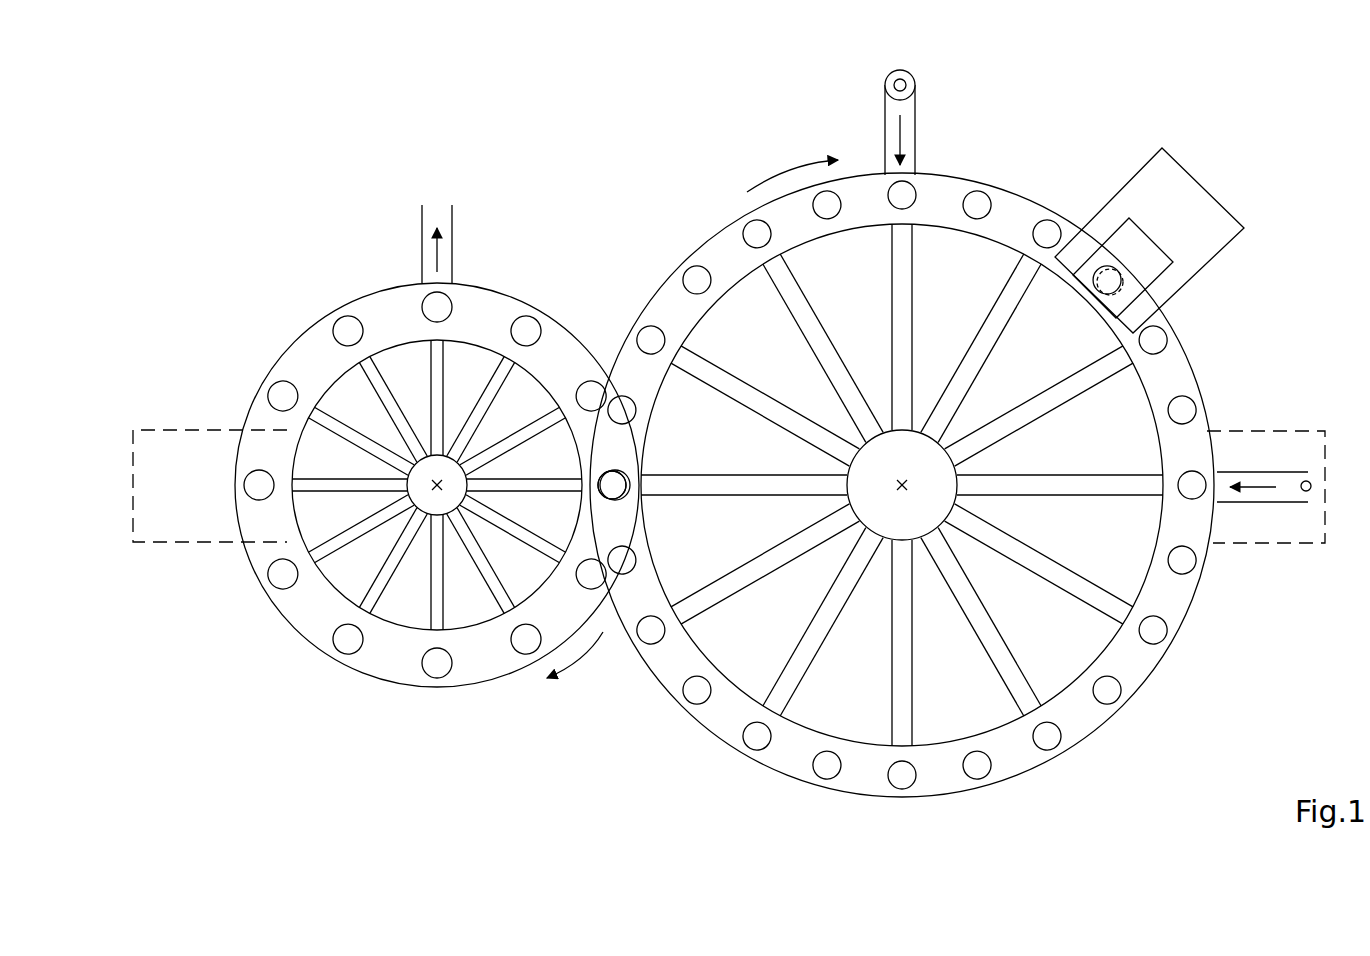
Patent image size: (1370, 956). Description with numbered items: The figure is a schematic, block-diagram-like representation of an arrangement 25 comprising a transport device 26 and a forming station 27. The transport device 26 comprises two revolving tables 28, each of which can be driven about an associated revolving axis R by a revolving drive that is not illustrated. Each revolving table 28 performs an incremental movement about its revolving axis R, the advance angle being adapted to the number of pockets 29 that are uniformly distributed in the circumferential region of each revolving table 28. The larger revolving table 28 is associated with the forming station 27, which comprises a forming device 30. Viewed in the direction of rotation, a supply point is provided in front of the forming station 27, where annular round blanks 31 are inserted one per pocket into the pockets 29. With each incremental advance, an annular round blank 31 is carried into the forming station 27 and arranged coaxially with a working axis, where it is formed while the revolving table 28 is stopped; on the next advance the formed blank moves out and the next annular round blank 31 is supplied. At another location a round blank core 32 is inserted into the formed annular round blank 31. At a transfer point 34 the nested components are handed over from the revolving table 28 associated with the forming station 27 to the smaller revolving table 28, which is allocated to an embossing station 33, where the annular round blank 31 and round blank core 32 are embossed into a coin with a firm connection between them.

The arrangement 25 is at (1225, 100).
The transport device 26 is at (650, 273).
The forming station 27 is at (1215, 173).
The revolving table 28 is at (302, 658).
The pockets 29 is at (345, 330).
The forming device 30 is at (1148, 288).
The annular round blank 31 is at (913, 78).
The round blank core 32 is at (1308, 482).
The embossing station 33 is at (178, 426).
The transfer point 34 is at (620, 470).
The revolving axis R is at (437, 485).